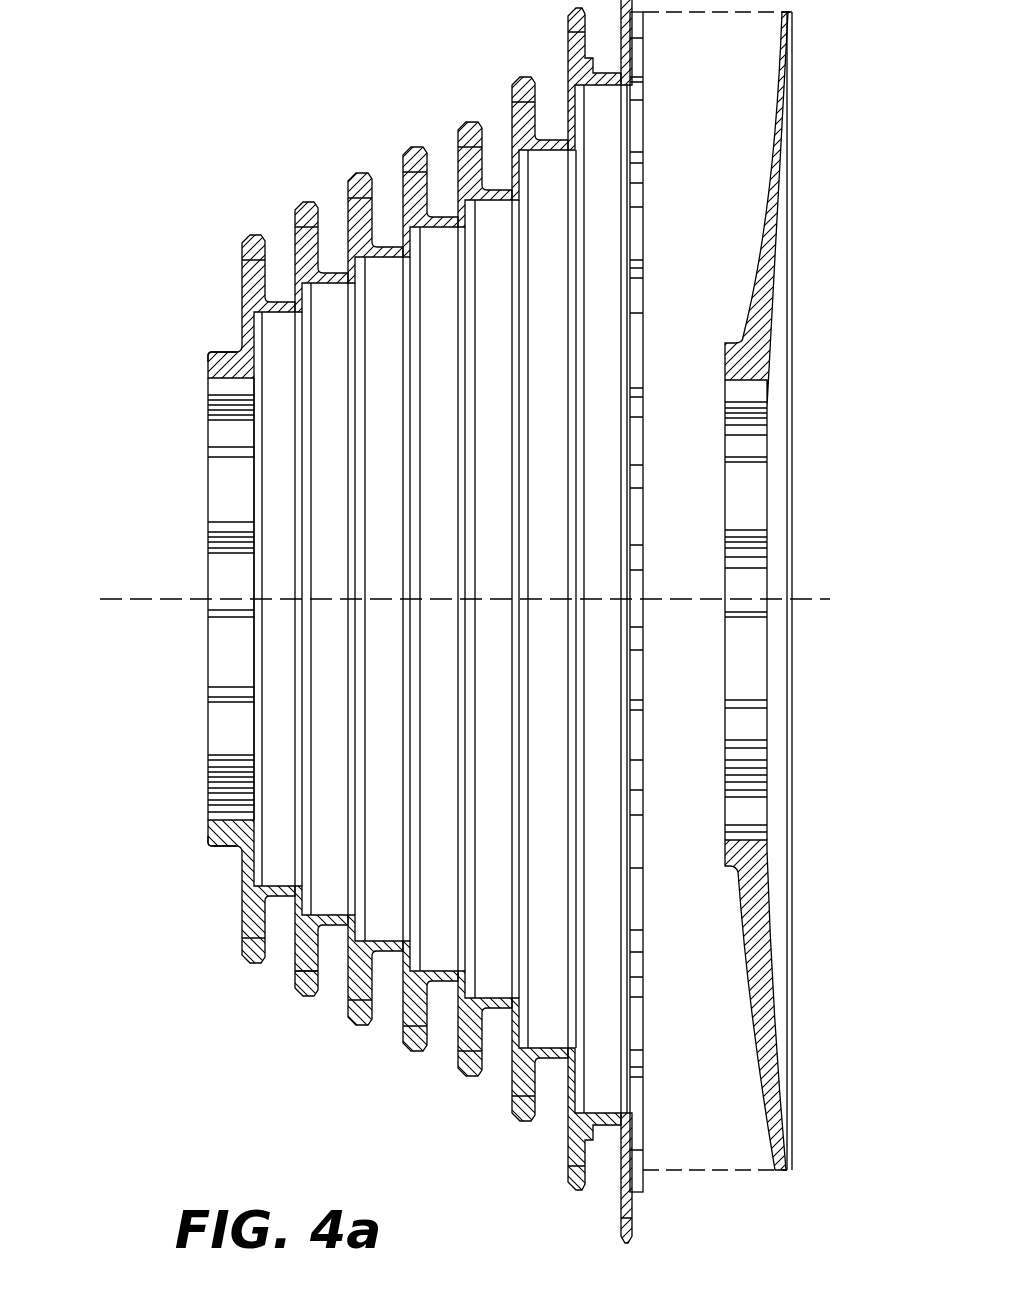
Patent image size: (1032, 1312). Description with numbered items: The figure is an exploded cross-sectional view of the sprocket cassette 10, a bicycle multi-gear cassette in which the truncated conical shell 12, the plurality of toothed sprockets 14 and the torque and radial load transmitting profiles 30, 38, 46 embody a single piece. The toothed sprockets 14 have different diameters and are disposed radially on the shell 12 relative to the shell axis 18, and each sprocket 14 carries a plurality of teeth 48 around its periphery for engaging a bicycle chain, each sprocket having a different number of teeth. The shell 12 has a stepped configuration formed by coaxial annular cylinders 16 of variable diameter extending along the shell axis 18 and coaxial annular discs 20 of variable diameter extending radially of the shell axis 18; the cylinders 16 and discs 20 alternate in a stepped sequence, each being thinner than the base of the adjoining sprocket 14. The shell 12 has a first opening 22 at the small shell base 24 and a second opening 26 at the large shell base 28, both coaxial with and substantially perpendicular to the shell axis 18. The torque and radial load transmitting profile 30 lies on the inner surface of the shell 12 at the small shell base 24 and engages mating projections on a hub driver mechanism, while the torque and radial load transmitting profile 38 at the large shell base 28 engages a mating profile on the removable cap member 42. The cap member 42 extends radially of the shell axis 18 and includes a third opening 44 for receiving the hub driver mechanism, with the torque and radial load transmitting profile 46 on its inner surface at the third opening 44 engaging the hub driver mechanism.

The sprocket cassette 10 is at (166, 177).
The truncated conical shell 12 is at (206, 353).
The toothed sprockets 14 is at (283, 644).
The coaxial annular cylinders 16 is at (193, 548).
The shell axis 18 is at (151, 598).
The coaxial annular discs 20 is at (402, 231).
The first opening 22 is at (155, 599).
The small shell base 24 is at (206, 846).
The second opening 26 is at (636, 130).
The large shell base 28 is at (687, 602).
The torque and radial load transmitting profile 30 is at (221, 423).
The torque and radial load transmitting profile 38 is at (637, 1071).
The cap member 42 is at (763, 591).
The third opening 44 is at (748, 830).
The torque and radial load transmitting profile 46 is at (748, 424).
The teeth 48 is at (291, 997).